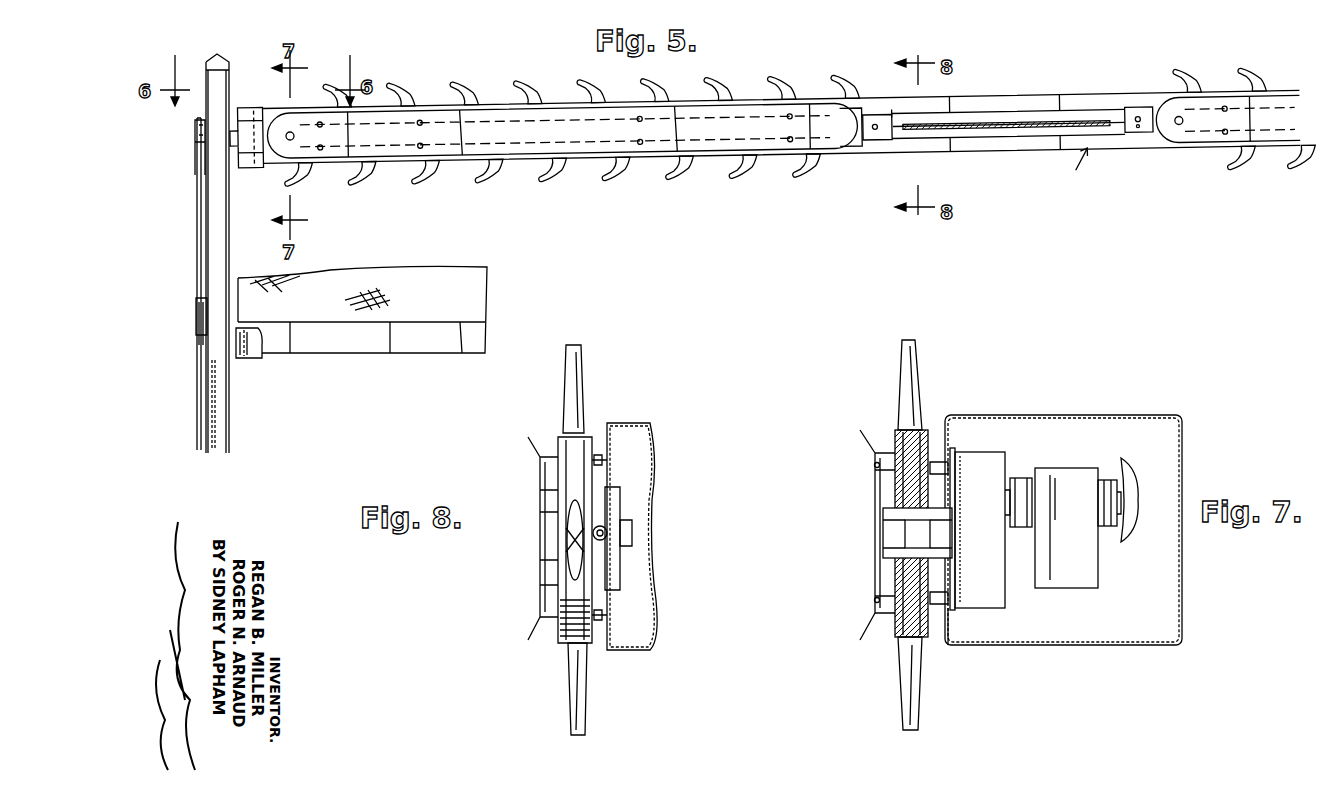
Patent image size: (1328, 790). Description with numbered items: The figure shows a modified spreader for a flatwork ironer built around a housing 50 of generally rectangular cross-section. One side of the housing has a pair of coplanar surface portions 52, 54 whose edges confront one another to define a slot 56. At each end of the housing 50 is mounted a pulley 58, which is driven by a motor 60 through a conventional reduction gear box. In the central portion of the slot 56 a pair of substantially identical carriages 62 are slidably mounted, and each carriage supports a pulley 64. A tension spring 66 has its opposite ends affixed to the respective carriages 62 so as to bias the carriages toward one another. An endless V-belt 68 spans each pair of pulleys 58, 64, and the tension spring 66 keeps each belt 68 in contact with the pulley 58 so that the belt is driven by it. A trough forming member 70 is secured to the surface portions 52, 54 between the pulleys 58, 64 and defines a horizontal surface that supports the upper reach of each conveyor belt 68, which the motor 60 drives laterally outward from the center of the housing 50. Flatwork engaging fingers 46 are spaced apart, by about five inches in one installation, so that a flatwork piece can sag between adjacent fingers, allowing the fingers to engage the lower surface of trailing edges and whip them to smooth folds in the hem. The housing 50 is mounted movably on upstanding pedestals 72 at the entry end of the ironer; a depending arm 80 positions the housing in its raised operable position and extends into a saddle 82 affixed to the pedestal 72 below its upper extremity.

In FIG. 5, the flatwork engaging fingers 46 is at (582, 90).
In FIG. 8, the flatwork engaging fingers 46 is at (579, 390).
In FIG. 7, the flatwork engaging fingers 46 is at (914, 385).
In FIG. 5, the housing 50 is at (1077, 165).
In FIG. 8, the housing 50 is at (615, 425).
In FIG. 7, the housing 50 is at (1052, 415).
In FIG. 5, the coplanar surface portion 52 is at (1046, 150).
In FIG. 7, the coplanar surface portion 52 is at (950, 624).
In FIG. 5, the coplanar surface portion 54 is at (1025, 108).
In FIG. 7, the coplanar surface portion 54 is at (951, 450).
In FIG. 5, the slot 56 is at (1029, 81).
In FIG. 8, the slot 56 is at (615, 522).
In FIG. 5, the pulley 58 is at (276, 160).
In FIG. 7, the pulley 58 is at (897, 440).
In FIG. 7, the motor 60 is at (1090, 560).
In FIG. 5, the carriage 62 is at (880, 152).
In FIG. 8, the carriage 62 is at (620, 560).
In FIG. 7, the carriage 62 is at (996, 590).
In FIG. 5, the pulley 64 is at (838, 165).
In FIG. 8, the pulley 64 is at (562, 640).
In FIG. 5, the tension spring 66 is at (996, 141).
In FIG. 8, the tension spring 66 is at (606, 535).
In FIG. 5, the endless V-belt 68 is at (522, 172).
In FIG. 5, the trough forming member 70 is at (413, 112).
In FIG. 8, the trough forming member 70 is at (548, 456).
In FIG. 7, the trough forming member 70 is at (874, 460).
In FIG. 5, the pedestal 72 is at (229, 92).
In FIG. 5, the depending arm 80 is at (199, 222).
In FIG. 5, the saddle 82 is at (196, 316).